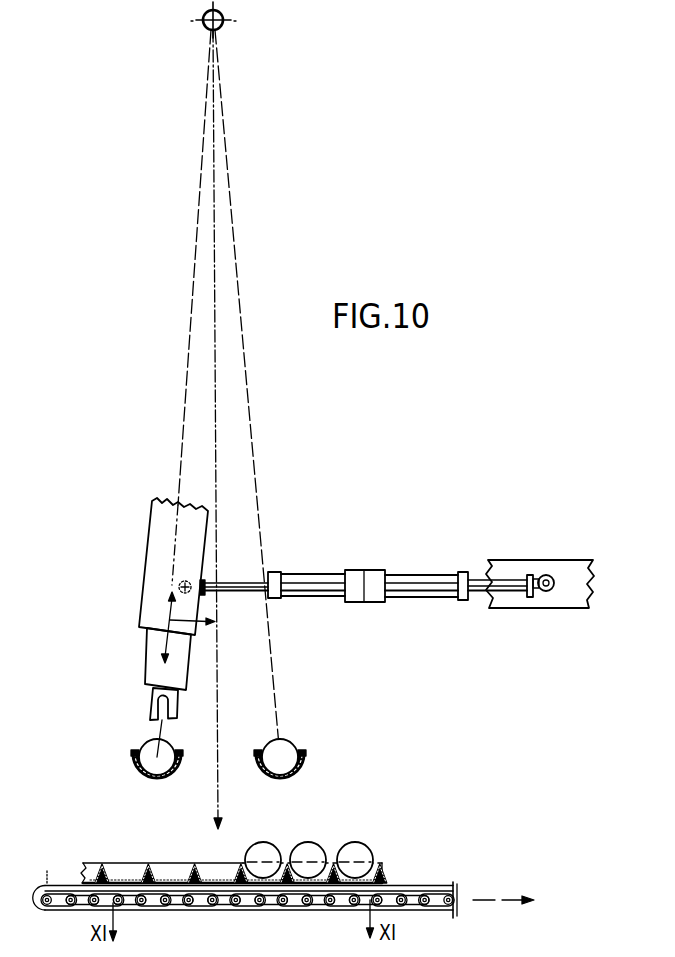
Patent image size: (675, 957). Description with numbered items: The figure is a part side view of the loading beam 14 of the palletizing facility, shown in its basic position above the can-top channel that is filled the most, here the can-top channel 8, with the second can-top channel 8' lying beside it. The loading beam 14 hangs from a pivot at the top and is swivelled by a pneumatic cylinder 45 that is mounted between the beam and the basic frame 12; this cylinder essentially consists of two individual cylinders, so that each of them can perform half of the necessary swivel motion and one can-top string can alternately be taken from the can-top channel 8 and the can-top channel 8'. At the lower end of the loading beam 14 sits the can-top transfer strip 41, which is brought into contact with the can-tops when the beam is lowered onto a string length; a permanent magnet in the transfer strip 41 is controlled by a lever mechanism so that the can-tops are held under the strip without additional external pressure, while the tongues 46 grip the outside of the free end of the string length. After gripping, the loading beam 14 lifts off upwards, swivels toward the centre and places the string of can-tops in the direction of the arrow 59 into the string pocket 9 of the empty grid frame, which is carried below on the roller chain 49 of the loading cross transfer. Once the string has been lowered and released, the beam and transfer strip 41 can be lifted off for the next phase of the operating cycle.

The loading beam 14 is at (162, 533).
The can-top transfer strip 41 is at (152, 660).
The tongues 46 is at (153, 700).
The pneumatic cylinder 45 is at (352, 571).
The basic frame 12 is at (569, 565).
The can-top channel 8 is at (158, 771).
The can-top channel 8' is at (303, 759).
The string pocket 9 is at (122, 867).
The arrow 59 is at (221, 443).
The conveyor chain 49 is at (245, 914).